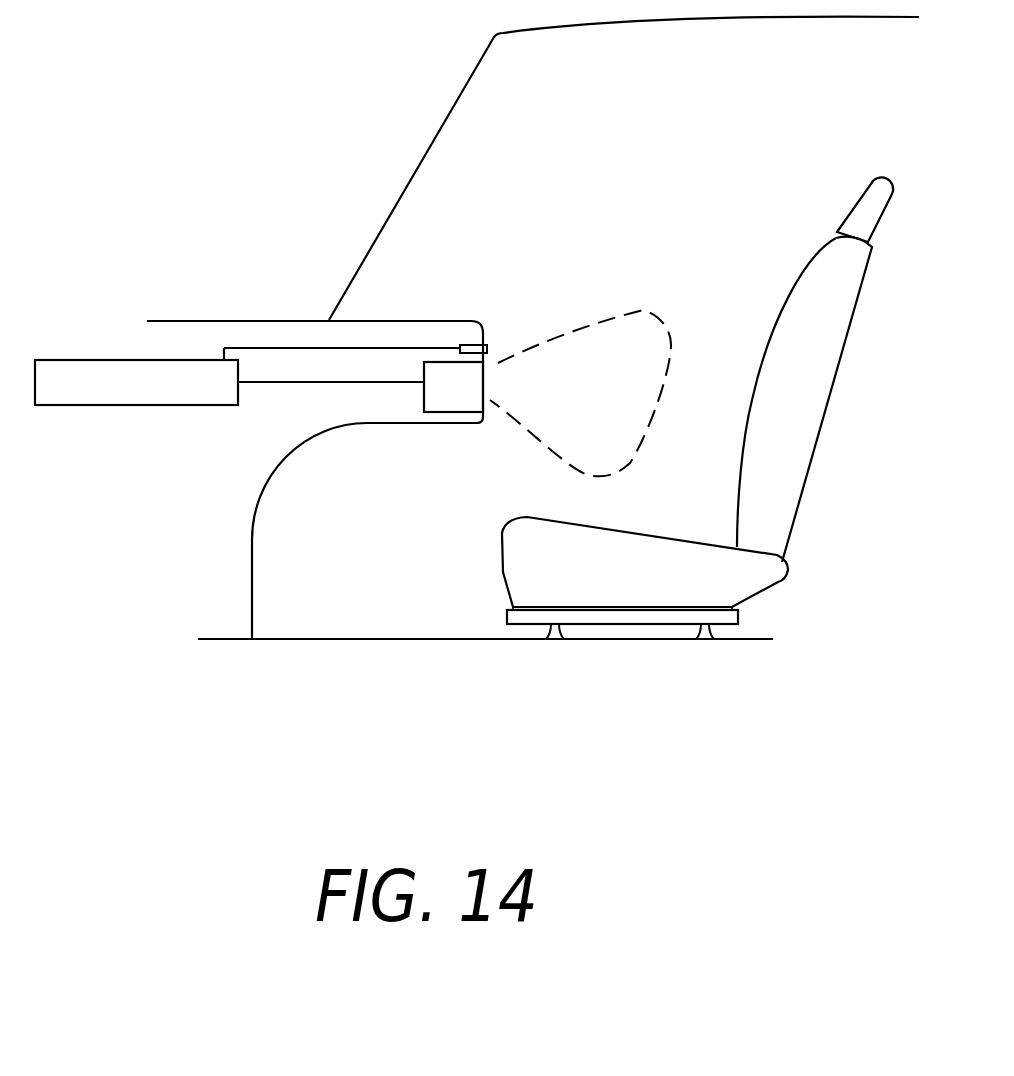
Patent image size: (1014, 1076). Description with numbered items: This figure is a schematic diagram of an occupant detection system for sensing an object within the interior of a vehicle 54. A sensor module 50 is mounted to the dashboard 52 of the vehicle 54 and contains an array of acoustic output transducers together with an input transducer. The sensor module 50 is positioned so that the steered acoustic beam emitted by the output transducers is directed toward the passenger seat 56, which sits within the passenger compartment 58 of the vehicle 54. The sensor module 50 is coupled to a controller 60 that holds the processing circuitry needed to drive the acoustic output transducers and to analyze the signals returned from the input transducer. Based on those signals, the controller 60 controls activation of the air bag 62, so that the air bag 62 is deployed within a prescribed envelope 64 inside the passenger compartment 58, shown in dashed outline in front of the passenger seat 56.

The sensor module 50 is at (488, 347).
The dashboard 52 is at (408, 320).
The vehicle 54 is at (246, 282).
The passenger seat 56 is at (650, 557).
The passenger compartment 58 is at (722, 135).
The controller 60 is at (135, 405).
The air bag 62 is at (424, 400).
The prescribed envelope 64 is at (643, 310).